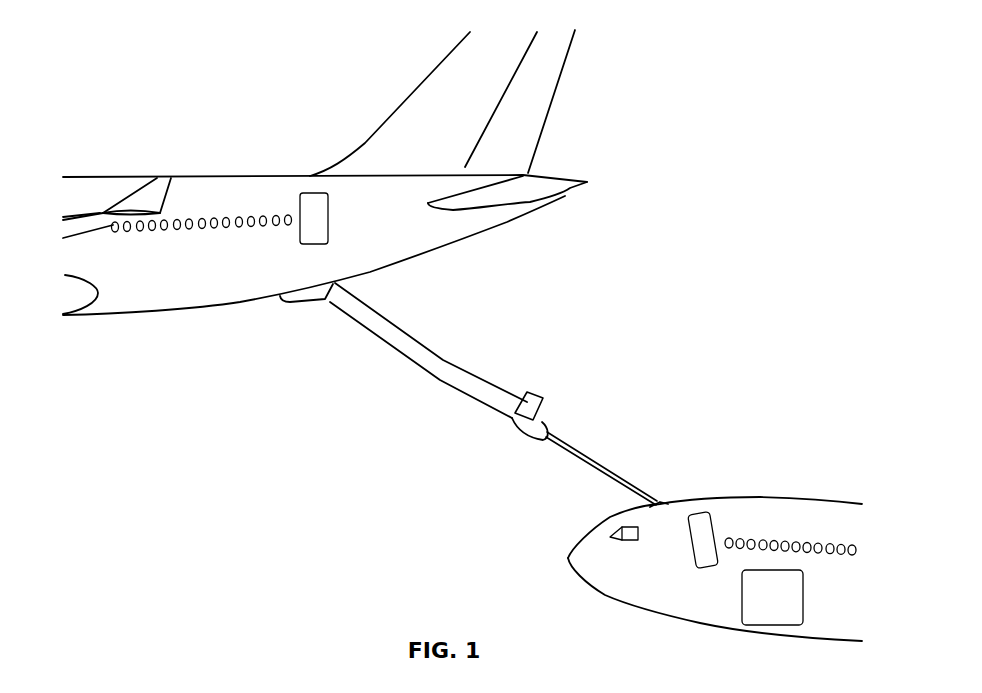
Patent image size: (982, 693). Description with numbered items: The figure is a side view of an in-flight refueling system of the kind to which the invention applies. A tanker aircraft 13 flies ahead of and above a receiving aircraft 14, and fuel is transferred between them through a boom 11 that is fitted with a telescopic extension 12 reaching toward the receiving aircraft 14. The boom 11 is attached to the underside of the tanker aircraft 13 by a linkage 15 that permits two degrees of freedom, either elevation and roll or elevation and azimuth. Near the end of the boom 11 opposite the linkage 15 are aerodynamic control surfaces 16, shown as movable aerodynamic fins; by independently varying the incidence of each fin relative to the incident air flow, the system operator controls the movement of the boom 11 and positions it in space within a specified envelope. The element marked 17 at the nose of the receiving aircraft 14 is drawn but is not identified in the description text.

The boom 11 is at (442, 368).
The telescopic extension 12 is at (605, 467).
The tanker aircraft 13 is at (240, 198).
The receiving aircraft 14 is at (803, 527).
The linkage 15 is at (325, 298).
The aerodynamic control surfaces 16 is at (533, 407).
The refueling receptacle 17 is at (660, 505).